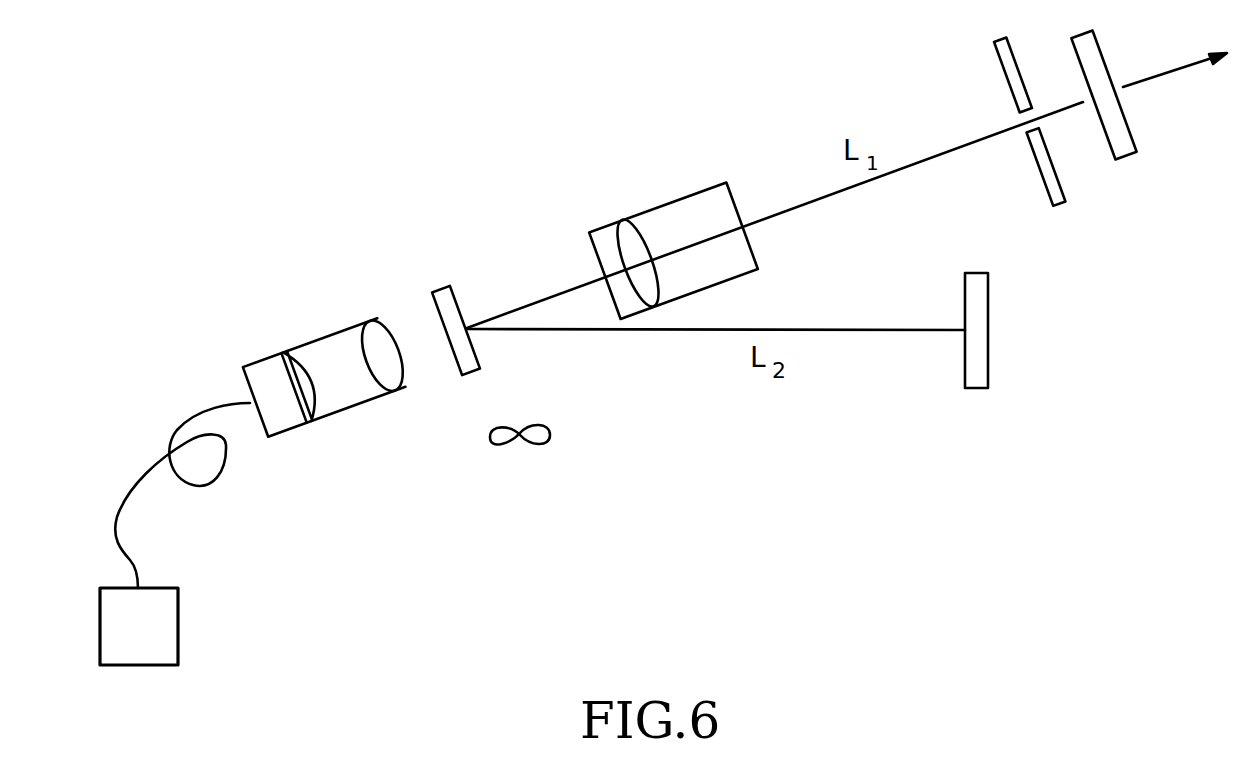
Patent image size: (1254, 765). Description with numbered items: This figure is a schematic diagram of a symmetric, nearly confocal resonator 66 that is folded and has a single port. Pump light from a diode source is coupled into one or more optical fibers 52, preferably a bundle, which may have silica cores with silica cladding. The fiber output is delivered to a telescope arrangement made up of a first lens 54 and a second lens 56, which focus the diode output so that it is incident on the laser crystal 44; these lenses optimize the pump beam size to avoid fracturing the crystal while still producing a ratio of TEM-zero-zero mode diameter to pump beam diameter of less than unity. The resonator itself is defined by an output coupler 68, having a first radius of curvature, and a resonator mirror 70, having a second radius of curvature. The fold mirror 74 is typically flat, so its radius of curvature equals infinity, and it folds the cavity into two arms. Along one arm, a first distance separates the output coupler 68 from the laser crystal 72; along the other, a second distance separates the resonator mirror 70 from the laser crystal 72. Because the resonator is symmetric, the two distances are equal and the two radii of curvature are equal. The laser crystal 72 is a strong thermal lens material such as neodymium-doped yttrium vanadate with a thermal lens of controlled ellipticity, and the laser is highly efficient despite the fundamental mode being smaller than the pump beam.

The laser crystal 44 is at (178, 610).
The optical fibers 52 is at (120, 538).
The first lens 54 is at (290, 350).
The second lens 56 is at (377, 322).
The symmetric nearly confocal resonator 66 is at (733, 162).
The output coupler 68 is at (1132, 120).
The resonator mirror 70 is at (1005, 332).
The laser crystal 72 is at (730, 260).
The fold mirror 74 is at (475, 348).